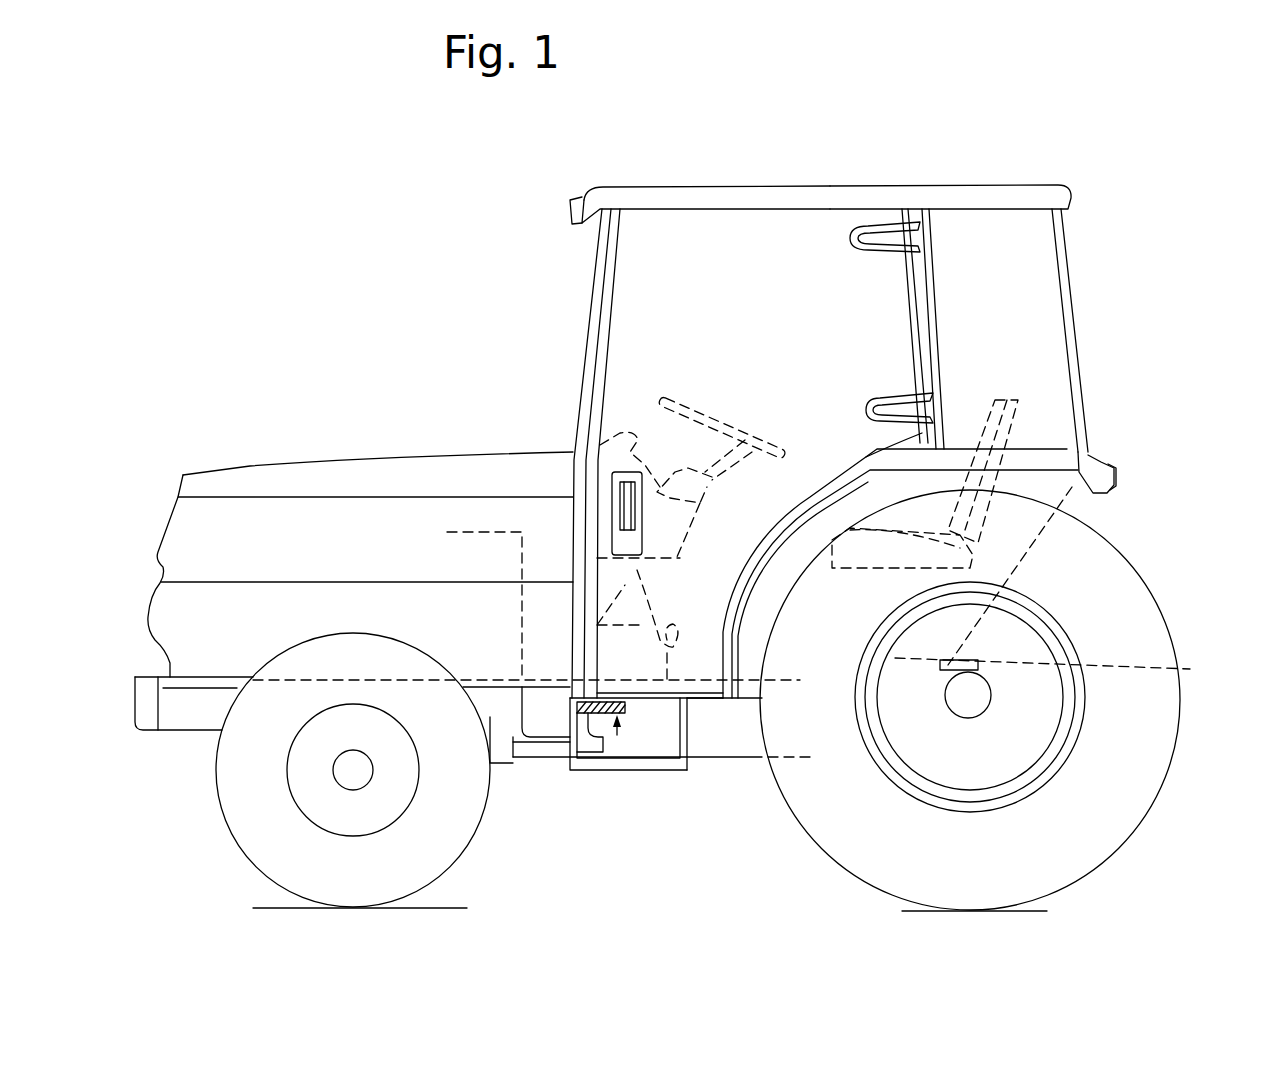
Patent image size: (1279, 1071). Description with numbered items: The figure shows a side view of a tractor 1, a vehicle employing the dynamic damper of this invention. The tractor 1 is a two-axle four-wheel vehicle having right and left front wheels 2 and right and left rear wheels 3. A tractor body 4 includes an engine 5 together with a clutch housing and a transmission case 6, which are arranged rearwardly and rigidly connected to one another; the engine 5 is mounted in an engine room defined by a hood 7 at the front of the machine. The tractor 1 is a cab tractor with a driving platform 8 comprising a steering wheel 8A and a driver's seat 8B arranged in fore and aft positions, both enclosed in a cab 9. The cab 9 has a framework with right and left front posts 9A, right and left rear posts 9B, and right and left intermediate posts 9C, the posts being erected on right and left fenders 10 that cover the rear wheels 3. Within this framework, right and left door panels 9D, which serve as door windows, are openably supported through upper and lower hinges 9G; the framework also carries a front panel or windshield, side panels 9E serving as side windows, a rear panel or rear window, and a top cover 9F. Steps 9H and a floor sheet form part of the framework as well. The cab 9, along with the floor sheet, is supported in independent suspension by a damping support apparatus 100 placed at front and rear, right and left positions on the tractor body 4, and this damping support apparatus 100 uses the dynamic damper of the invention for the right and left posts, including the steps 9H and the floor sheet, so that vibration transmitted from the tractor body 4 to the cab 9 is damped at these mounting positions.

The tractor 1 is at (483, 285).
The front wheels 2 is at (257, 845).
The rear wheels 3 is at (1106, 850).
The tractor body 4 is at (747, 763).
The engine 5 is at (502, 717).
The transmission case 6 is at (707, 759).
The hood 7 is at (366, 470).
The driving platform 8 is at (898, 504).
The steering wheel 8A is at (693, 407).
The driver's seat 8B is at (998, 420).
The cab 9 is at (1070, 241).
The front posts 9A is at (590, 375).
The rear posts 9B is at (1077, 348).
The intermediate posts 9C is at (925, 310).
The door panels 9D is at (730, 213).
The side panels 9E is at (1047, 303).
The top cover 9F is at (950, 200).
The hinges 9G is at (898, 408).
The steps 9H is at (667, 700).
The fenders 10 is at (1040, 457).
The damping support apparatus 100 is at (608, 772).